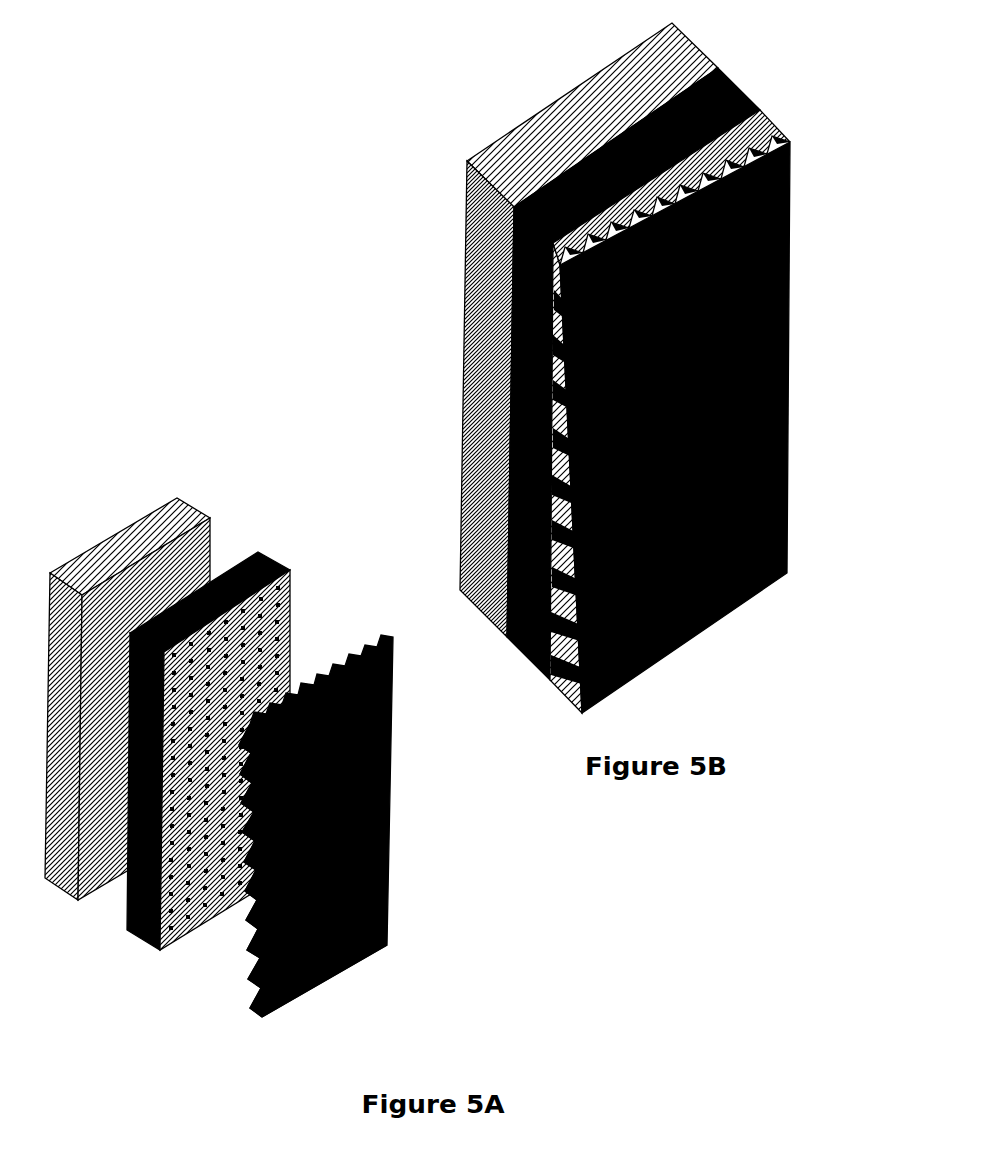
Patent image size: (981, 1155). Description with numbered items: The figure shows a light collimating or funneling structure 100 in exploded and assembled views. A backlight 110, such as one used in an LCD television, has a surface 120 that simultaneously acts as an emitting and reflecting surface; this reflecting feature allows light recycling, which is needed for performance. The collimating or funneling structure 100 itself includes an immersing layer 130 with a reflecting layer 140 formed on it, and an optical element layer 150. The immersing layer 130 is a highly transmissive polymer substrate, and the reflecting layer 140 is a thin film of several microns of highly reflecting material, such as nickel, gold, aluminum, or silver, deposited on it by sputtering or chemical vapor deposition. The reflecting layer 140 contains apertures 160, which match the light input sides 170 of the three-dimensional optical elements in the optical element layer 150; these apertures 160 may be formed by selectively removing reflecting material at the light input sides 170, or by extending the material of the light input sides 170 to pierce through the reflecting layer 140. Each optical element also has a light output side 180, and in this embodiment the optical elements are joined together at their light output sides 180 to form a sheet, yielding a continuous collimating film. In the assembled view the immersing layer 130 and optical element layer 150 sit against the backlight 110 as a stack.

In FIG. 5A, the light collimating or funneling structure 100 is at (403, 538).
In FIG. 5B, the light collimating or funneling structure 100 is at (737, 43).
In FIG. 5A, the backlight 110 is at (121, 701).
In FIG. 5B, the backlight 110 is at (547, 135).
In FIG. 5A, the surface 120 is at (102, 795).
In FIG. 5A, the immersing layer 130 is at (197, 786).
In FIG. 5B, the immersing layer 130 is at (516, 652).
In FIG. 5A, the reflecting layer 140 is at (173, 838).
In FIG. 5B, the reflecting layer 140 is at (742, 127).
In FIG. 5A, the optical element layer 150 is at (313, 811).
In FIG. 5B, the optical element layer 150 is at (702, 411).
In FIG. 5A, the apertures 160 is at (207, 908).
In FIG. 5A, the light input side 170 is at (243, 982).
In FIG. 5A, the light output side 180 is at (292, 993).